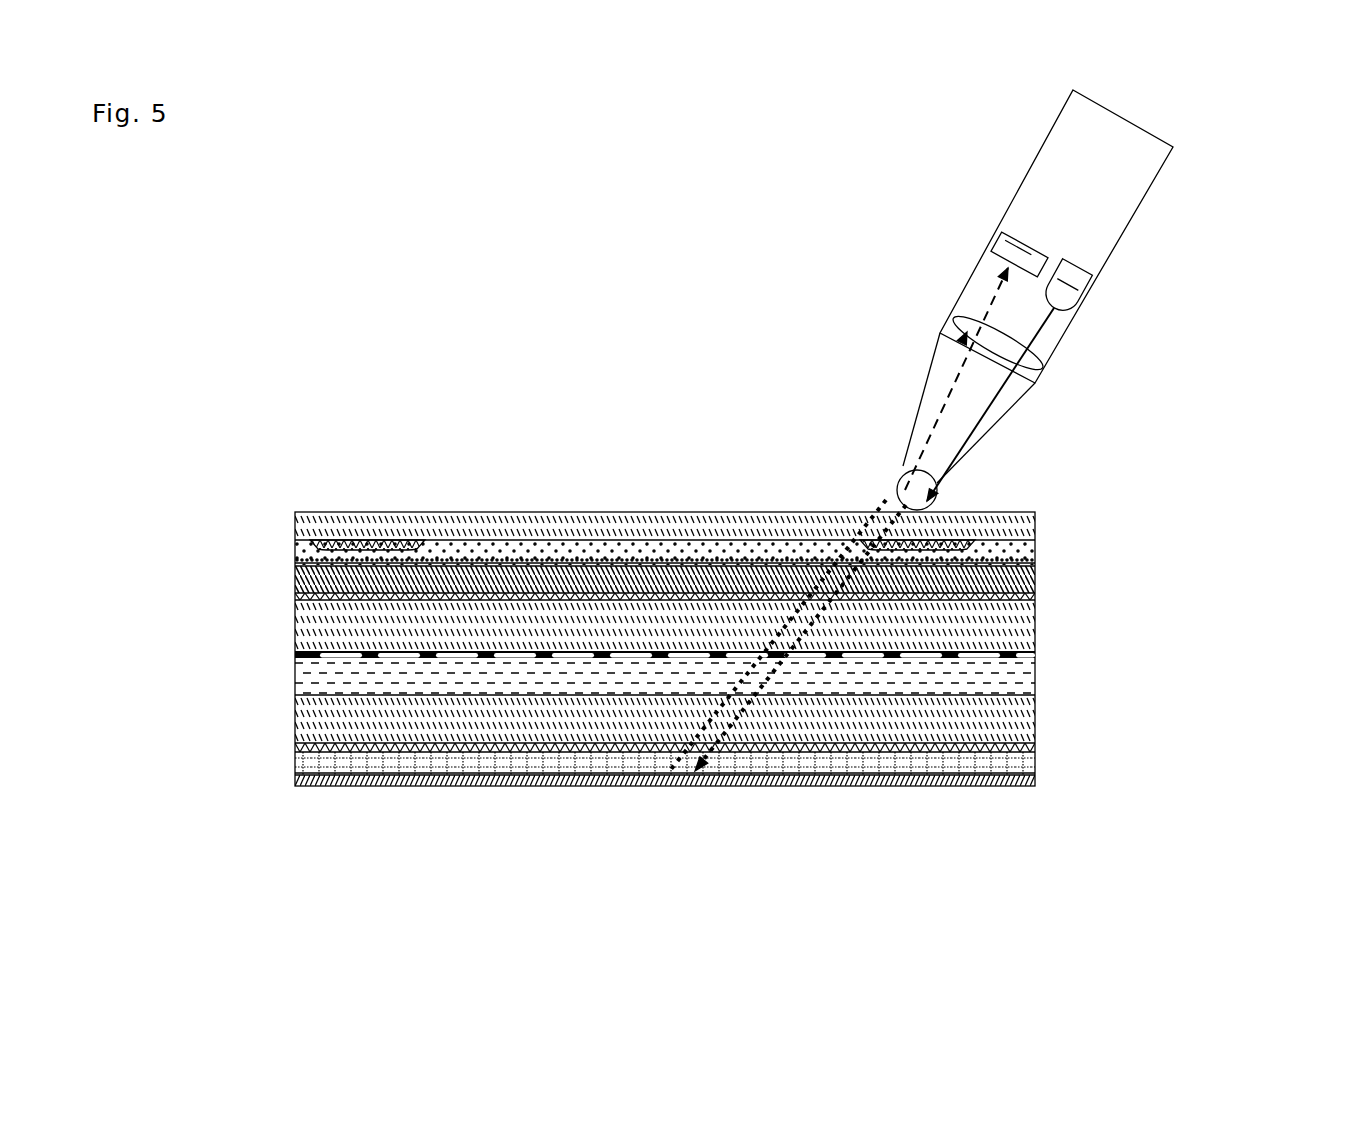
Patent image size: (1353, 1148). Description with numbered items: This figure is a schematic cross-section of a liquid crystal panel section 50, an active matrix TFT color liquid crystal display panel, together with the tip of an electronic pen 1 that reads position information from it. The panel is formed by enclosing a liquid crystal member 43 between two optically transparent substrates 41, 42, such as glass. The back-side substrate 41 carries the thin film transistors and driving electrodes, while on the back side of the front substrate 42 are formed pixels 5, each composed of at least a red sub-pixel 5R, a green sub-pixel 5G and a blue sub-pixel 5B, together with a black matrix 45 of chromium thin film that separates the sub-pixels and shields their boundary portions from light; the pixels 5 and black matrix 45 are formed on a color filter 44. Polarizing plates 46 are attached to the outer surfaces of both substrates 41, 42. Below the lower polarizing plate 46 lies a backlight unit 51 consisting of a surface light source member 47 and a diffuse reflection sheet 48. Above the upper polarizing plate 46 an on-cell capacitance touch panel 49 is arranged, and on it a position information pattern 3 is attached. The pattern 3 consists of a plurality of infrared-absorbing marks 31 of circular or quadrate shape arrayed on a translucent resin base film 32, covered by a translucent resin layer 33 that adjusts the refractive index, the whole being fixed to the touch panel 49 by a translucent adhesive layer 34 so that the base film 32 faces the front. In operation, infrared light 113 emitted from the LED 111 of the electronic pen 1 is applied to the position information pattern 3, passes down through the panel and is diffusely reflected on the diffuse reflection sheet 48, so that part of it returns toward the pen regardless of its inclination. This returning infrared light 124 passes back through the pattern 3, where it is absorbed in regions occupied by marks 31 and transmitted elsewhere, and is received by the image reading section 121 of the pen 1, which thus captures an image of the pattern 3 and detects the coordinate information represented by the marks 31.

The electronic pen 1 is at (1148, 205).
The LED 111 is at (1088, 292).
The infrared light 113 is at (1018, 408).
The image reading section 121 is at (995, 238).
The infrared light 124 is at (913, 437).
The position information pattern 3 is at (293, 528).
The mark 31 is at (402, 539).
The base film 32 is at (972, 517).
The resin layer 33 is at (1023, 546).
The adhesive layer 34 is at (1025, 562).
The touch panel 49 is at (1027, 580).
The polarizing plate 46 is at (1015, 615).
The substrate 42 is at (1020, 652).
The color filter 44 is at (1015, 670).
The liquid crystal member 43 is at (1008, 718).
The substrate 41 is at (1015, 747).
The liquid crystal panel section 50 is at (1250, 430).
The backlight unit 51 is at (576, 772).
The surface light source member 47 is at (300, 767).
The diffuse reflection sheet 48 is at (297, 784).
The red sub-pixel 5R is at (404, 657).
The green sub-pixel 5G is at (458, 657).
The blue sub-pixel 5B is at (518, 657).
The black matrix 45 is at (550, 657).
The pixel 5 is at (490, 780).